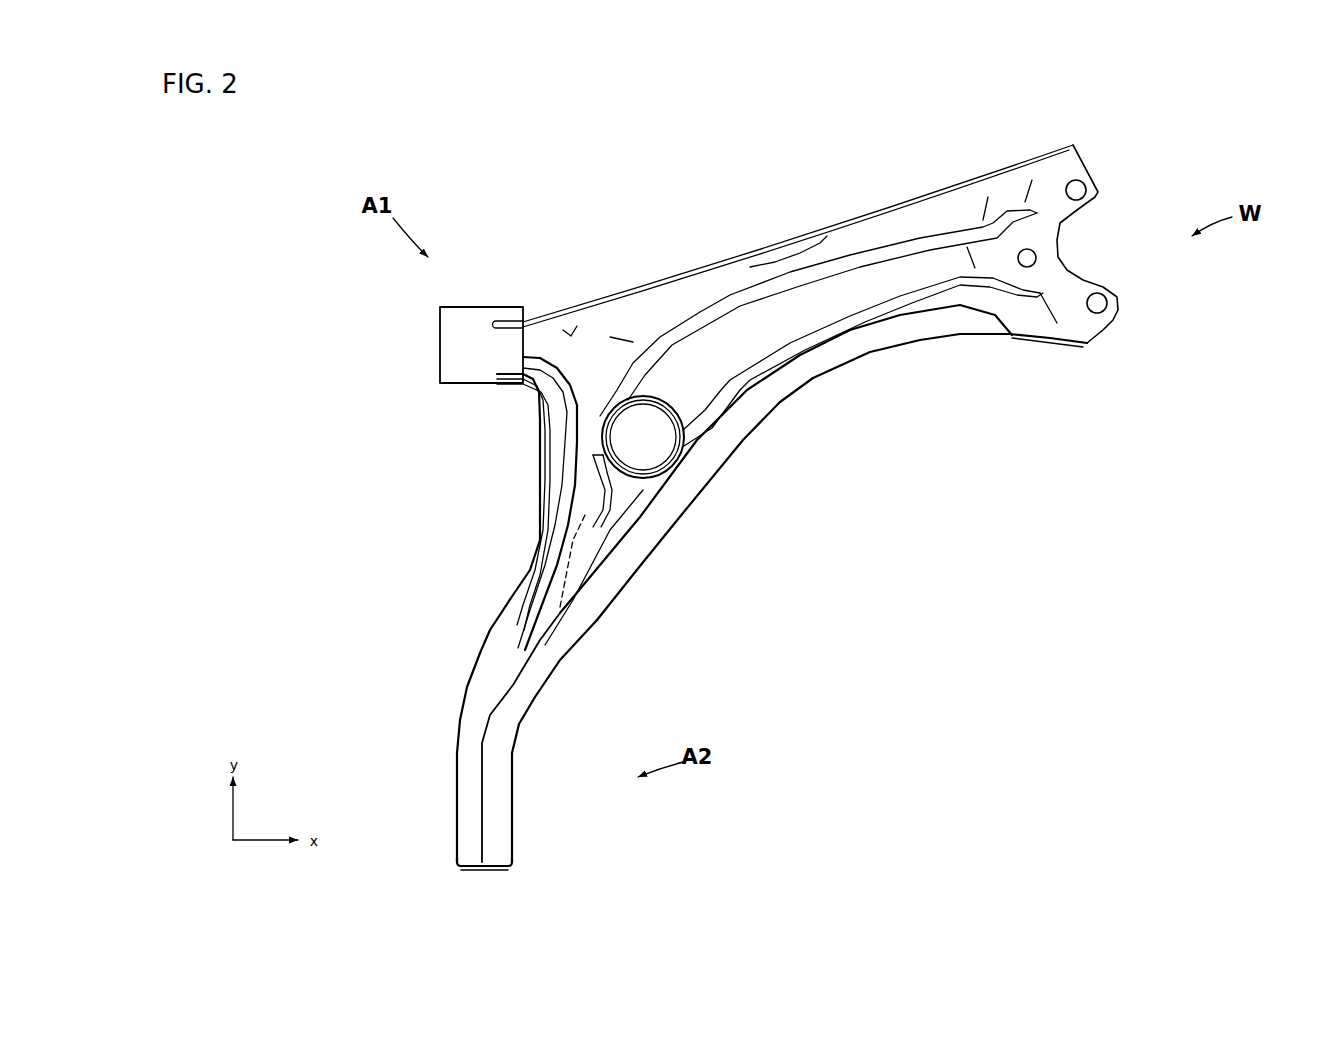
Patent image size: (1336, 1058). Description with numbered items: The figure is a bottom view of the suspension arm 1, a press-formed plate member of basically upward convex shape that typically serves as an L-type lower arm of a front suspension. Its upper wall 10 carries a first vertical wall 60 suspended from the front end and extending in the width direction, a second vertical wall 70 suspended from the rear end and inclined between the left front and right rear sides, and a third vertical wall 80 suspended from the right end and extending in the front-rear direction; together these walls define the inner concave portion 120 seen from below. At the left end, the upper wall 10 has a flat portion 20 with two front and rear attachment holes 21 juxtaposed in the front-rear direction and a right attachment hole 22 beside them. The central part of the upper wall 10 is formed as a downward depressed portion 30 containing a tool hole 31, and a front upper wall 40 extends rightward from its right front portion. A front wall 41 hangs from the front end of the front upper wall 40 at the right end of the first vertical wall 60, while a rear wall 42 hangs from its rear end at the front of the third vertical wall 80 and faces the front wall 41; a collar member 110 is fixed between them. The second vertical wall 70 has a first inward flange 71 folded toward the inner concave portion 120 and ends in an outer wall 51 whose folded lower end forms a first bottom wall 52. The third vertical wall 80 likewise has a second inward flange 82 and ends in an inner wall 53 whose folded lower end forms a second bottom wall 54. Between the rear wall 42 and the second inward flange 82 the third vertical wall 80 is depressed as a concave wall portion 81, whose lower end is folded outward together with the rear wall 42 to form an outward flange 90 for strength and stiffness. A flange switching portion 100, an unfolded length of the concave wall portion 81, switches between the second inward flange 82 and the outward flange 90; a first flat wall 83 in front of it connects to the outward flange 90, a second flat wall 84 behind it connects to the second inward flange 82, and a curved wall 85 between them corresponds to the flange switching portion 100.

The suspension arm 1 is at (594, 216).
The upper wall 10 is at (665, 305).
The flat portion 20 is at (1083, 333).
The front and rear attachment holes 21 is at (1087, 191).
The right attachment hole 22 is at (1036, 258).
The depressed portion 30 is at (690, 388).
The tool hole 31 is at (688, 450).
The front upper wall 40 is at (543, 348).
The front wall 41 is at (567, 367).
The rear wall 42 is at (557, 395).
The outer wall 51 is at (512, 800).
The first bottom wall 52 is at (505, 848).
The inner wall 53 is at (452, 793).
The second bottom wall 54 is at (470, 832).
The first vertical wall 60 is at (722, 241).
The second vertical wall 70 is at (799, 415).
The first inward flange 71 is at (653, 520).
The third vertical wall 80 is at (430, 677).
The concave wall portion 81 is at (488, 439).
The second inward flange 82 is at (495, 665).
The first flat wall 83 is at (540, 500).
The second flat wall 84 is at (497, 612).
The curved wall 85 is at (528, 546).
The outward flange 90 is at (550, 460).
The flange switching portion 100 is at (515, 548).
The collar member 110 is at (450, 352).
The inner concave portion 120 is at (867, 233).